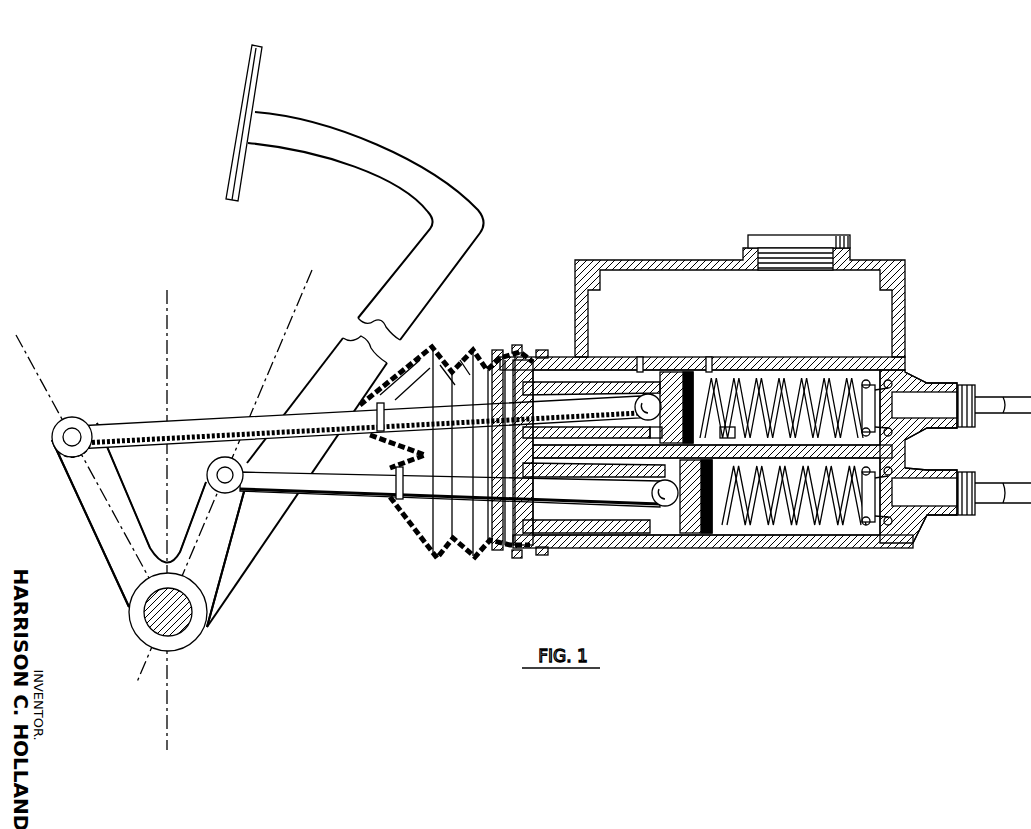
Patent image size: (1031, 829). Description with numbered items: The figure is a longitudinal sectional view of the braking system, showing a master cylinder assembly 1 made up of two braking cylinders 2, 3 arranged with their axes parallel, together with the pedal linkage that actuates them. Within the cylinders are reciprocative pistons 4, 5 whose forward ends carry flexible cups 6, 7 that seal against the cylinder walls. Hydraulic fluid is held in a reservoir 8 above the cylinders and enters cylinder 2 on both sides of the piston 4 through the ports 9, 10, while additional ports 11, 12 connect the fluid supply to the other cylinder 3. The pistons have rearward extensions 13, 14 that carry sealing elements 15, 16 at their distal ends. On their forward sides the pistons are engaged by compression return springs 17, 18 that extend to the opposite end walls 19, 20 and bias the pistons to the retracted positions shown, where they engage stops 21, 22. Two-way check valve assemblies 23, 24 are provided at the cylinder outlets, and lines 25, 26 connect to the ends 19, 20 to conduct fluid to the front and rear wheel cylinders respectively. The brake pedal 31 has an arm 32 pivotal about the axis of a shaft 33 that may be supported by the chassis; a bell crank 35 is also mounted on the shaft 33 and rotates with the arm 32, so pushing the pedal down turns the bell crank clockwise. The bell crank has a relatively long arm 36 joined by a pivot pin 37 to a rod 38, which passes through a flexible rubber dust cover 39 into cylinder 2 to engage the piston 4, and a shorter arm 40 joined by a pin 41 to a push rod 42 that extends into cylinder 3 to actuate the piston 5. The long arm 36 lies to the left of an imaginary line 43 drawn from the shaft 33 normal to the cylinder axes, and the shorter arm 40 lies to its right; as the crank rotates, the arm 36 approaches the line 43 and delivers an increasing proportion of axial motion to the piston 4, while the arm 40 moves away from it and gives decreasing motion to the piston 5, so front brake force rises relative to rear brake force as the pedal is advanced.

The master cylinder assembly 1 is at (664, 552).
The braking cylinder 2 is at (790, 366).
The braking cylinder 3 is at (772, 540).
The piston 4 is at (672, 374).
The piston 5 is at (692, 536).
The flexible cup 6 is at (692, 380).
The flexible cup 7 is at (707, 535).
The reservoir 8 is at (688, 285).
The port 9 is at (642, 368).
The port 10 is at (712, 370).
The port 11 is at (655, 447).
The port 12 is at (735, 433).
The rearward extension 13 is at (575, 370).
The rearward extension 14 is at (612, 540).
The sealing element 15 is at (541, 354).
The sealing element 16 is at (562, 548).
The compression return spring 17 is at (846, 380).
The compression return spring 18 is at (832, 530).
The end wall 19 is at (922, 430).
The end wall 20 is at (920, 535).
The stop 21 is at (520, 347).
The stop 22 is at (512, 556).
The two-way check valve assembly 23 is at (917, 385).
The two-way check valve assembly 24 is at (876, 526).
The line 25 is at (985, 400).
The line 26 is at (984, 507).
The brake pedal 31 is at (226, 183).
The arm 32 is at (385, 298).
The shaft 33 is at (145, 627).
The bell crank 35 is at (94, 562).
The long arm 36 is at (88, 493).
The pivot pin 37 is at (78, 422).
The rod 38 is at (240, 424).
The flexible rubber dust cover 39 is at (418, 540).
The shorter arm 40 is at (216, 562).
The pin 41 is at (206, 475).
The push rod 42 is at (318, 492).
The imaginary line 43 is at (169, 392).